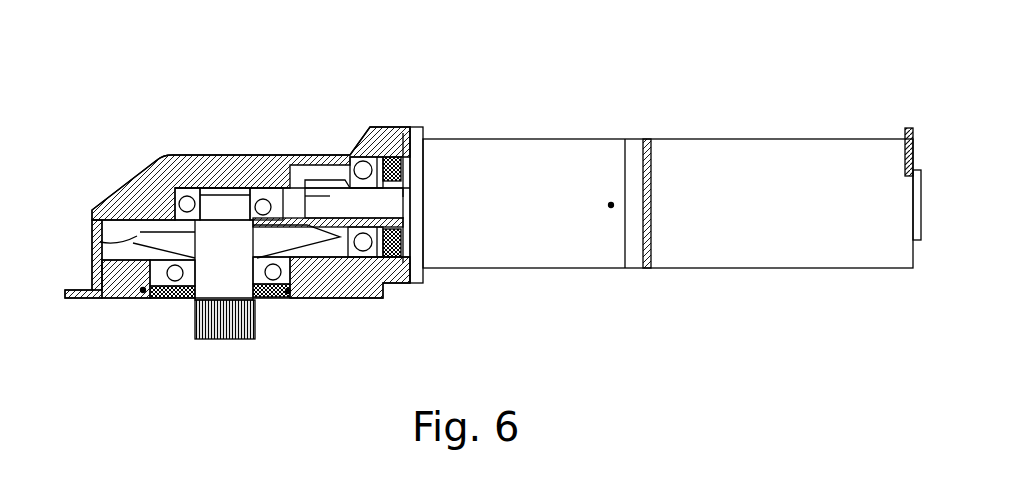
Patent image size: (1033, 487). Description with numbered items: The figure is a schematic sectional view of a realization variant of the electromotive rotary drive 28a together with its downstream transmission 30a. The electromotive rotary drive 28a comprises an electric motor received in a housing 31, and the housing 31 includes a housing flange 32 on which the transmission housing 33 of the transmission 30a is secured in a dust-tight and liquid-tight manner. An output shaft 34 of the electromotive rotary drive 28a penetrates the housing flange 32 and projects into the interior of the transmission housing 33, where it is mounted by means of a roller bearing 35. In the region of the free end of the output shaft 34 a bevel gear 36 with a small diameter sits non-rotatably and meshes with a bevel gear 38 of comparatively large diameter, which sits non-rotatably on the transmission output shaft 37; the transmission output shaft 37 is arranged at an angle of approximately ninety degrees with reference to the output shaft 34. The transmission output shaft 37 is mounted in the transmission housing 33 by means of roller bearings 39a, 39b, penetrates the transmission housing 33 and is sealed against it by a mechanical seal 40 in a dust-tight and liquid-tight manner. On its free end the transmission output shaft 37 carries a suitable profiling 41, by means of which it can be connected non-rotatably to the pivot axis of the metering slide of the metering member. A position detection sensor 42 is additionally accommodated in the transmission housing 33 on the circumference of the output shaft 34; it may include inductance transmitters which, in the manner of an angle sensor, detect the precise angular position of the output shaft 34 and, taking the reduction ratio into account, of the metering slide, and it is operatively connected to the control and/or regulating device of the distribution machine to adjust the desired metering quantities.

The electromotive rotary drive 28a is at (672, 112).
The transmission 30a is at (256, 122).
The housing 31 is at (767, 138).
The housing flange 32 is at (418, 163).
The transmission housing 33 is at (185, 160).
The output shaft 34 is at (328, 198).
The roller bearing 35 is at (363, 160).
The bevel gear 36 is at (340, 224).
The transmission output shaft 37 is at (212, 244).
The bevel gear 38 is at (100, 242).
The roller bearing 39a is at (212, 188).
The roller bearing 39b is at (165, 273).
The mechanical seal 40 is at (177, 298).
The profiling 41 is at (202, 341).
The position detection sensor 42 is at (394, 165).